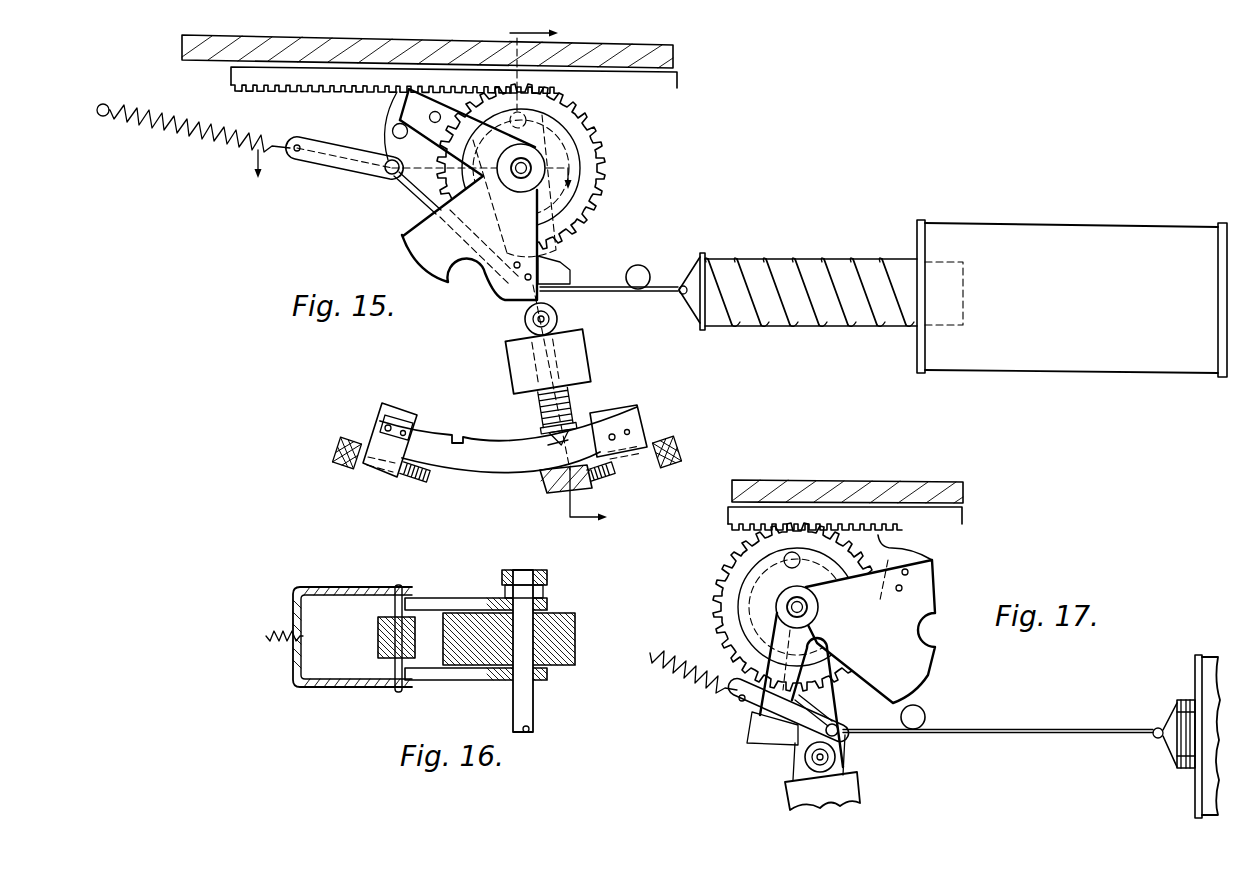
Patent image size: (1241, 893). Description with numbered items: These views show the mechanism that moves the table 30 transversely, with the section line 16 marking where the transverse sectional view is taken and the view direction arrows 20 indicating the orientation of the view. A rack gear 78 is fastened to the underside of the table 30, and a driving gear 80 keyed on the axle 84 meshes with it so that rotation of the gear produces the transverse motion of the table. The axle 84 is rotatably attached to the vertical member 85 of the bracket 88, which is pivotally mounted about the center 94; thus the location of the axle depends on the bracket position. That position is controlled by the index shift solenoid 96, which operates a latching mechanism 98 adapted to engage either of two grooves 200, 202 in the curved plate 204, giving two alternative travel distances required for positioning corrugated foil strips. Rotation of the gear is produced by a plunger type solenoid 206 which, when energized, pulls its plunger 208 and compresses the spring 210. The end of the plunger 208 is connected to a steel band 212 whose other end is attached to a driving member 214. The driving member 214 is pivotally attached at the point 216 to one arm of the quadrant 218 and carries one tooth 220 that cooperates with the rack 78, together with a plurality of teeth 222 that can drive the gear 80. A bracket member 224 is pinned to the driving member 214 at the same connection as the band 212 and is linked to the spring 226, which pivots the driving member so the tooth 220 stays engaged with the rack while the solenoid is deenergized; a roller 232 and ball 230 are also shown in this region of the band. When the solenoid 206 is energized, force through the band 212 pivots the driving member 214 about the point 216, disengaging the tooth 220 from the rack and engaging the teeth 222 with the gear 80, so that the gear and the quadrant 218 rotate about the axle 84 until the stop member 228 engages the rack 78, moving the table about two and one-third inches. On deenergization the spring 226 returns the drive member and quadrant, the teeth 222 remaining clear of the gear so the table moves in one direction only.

In FIG. 15, the section line 16— 16 is at (403, 168).
In FIG. 15, the direction arrow / section line 20- 20 is at (543, 287).
In FIG. 15, the table 30 is at (676, 49).
In FIG. 17, the table 30 is at (830, 480).
In FIG. 15, the rack gear 78 is at (680, 83).
In FIG. 17, the rack gear 78 is at (868, 515).
In FIG. 15, the driving gear 80 is at (598, 141).
In FIG. 16, the driving gear 80 is at (578, 637).
In FIG. 17, the driving gear 80 is at (738, 548).
In FIG. 15, the axle 84 is at (522, 180).
In FIG. 16, the axle 84 is at (523, 718).
In FIG. 17, the axle 84 is at (812, 606).
In FIG. 15, the vertical member 85 is at (536, 411).
In FIG. 16, the vertical member 85 is at (548, 580).
In FIG. 17, the vertical member 85 is at (797, 765).
In FIG. 15, the bracket 88 is at (552, 496).
In FIG. 15, the center 94 is at (560, 106).
In FIG. 17, the center 94 is at (780, 567).
In FIG. 15, the index shift solenoid 96 is at (590, 360).
In FIG. 17, the index shift solenoid 96 is at (860, 793).
In FIG. 15, the latching mechanism 98 is at (583, 418).
In FIG. 15, the groove 200 is at (464, 432).
In FIG. 15, the groove 202 is at (550, 447).
In FIG. 15, the curved plate 204 is at (452, 478).
In FIG. 15, the plunger type solenoid 206 is at (1053, 222).
In FIG. 17, the plunger type solenoid 206 is at (1207, 655).
In FIG. 15, the plunger 208 is at (750, 257).
In FIG. 17, the plunger 208 is at (1165, 720).
In FIG. 15, the spring 210 is at (850, 257).
In FIG. 17, the spring 210 is at (1185, 700).
In FIG. 15, the steel band 212 is at (614, 292).
In FIG. 17, the steel band 212 is at (1012, 732).
In FIG. 15, the driving member 214 is at (393, 172).
In FIG. 16, the driving member 214 is at (378, 638).
In FIG. 17, the driving member 214 is at (763, 747).
In FIG. 15, the point 216 is at (428, 116).
In FIG. 17, the point 216 is at (782, 598).
In FIG. 15, the quadrant 218 is at (447, 287).
In FIG. 16, the quadrant 218 is at (482, 683).
In FIG. 17, the quadrant 218 is at (933, 600).
In FIG. 15, the tooth 220 is at (398, 97).
In FIG. 17, the tooth 220 is at (750, 747).
In FIG. 15, the teeth 222 is at (432, 188).
In FIG. 17, the teeth 222 is at (815, 703).
In FIG. 15, the bracket member 224 is at (320, 163).
In FIG. 16, the bracket member 224 is at (350, 690).
In FIG. 17, the bracket member 224 is at (735, 703).
In FIG. 15, the spring 226 is at (165, 118).
In FIG. 16, the spring 226 is at (270, 629).
In FIG. 17, the spring 226 is at (667, 655).
In FIG. 15, the stop member 228 is at (552, 272).
In FIG. 17, the stop member 228 is at (897, 567).
In FIG. 15, the ball 230 is at (642, 268).
In FIG. 17, the ball 230 is at (918, 710).
In FIG. 15, the roller 232 is at (527, 320).
In FIG. 17, the roller 232 is at (843, 757).